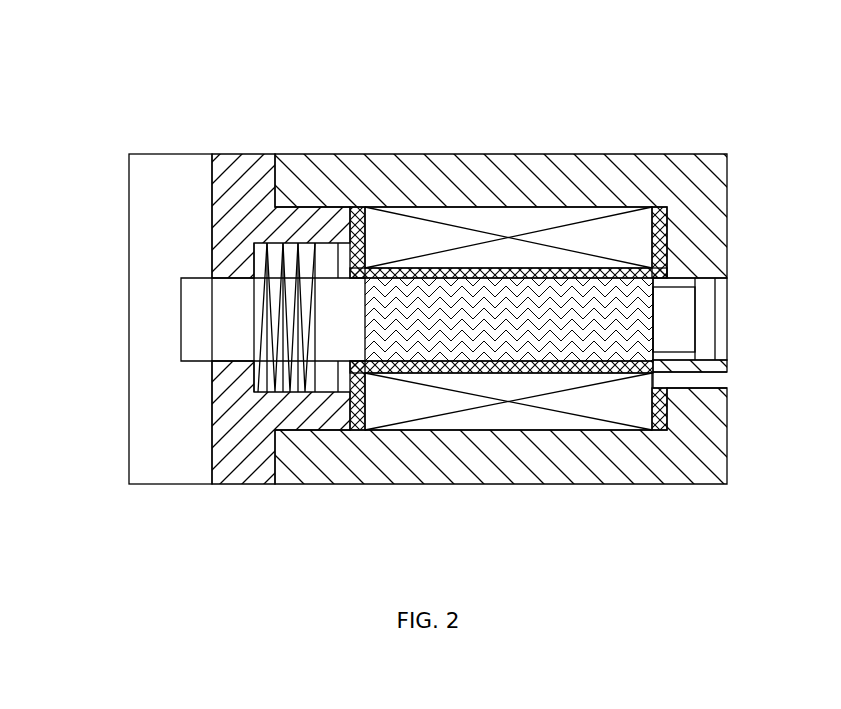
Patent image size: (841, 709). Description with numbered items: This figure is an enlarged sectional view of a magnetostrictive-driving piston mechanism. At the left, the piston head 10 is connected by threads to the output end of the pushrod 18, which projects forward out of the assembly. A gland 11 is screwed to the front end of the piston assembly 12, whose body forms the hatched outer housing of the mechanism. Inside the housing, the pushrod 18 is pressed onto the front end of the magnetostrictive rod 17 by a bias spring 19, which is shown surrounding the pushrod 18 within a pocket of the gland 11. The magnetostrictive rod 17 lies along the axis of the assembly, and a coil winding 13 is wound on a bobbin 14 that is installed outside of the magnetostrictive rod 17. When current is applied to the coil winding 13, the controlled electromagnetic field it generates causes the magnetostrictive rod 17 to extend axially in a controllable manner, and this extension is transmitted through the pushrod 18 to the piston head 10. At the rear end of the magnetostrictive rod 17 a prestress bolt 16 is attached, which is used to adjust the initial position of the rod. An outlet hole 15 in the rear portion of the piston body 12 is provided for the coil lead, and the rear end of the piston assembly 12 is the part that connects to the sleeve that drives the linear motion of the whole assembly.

The piston head 10 is at (171, 175).
The gland 11 is at (262, 172).
The piston assembly 12 is at (388, 175).
The coil winding 13 is at (515, 220).
The bobbin 14 is at (657, 223).
The outlet hole 15 is at (708, 392).
The prestress bolt 16 is at (667, 335).
The magnetostrictive rod 17 is at (518, 348).
The pushrod 18 is at (350, 340).
The bias spring 19 is at (287, 360).